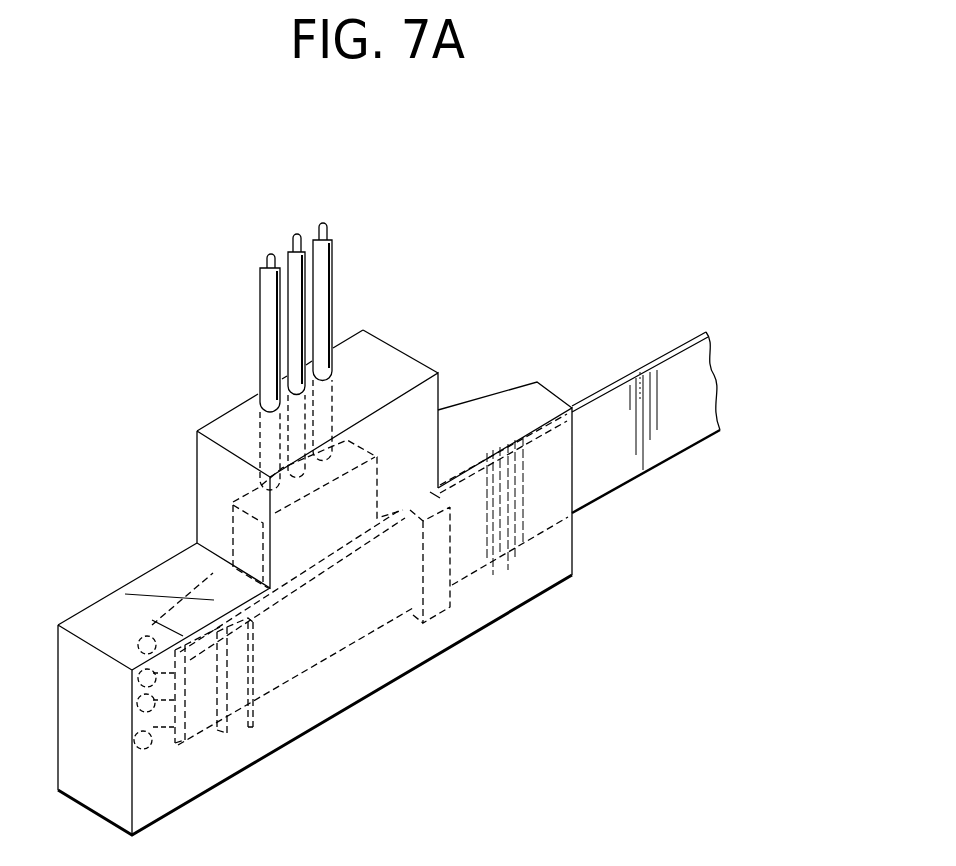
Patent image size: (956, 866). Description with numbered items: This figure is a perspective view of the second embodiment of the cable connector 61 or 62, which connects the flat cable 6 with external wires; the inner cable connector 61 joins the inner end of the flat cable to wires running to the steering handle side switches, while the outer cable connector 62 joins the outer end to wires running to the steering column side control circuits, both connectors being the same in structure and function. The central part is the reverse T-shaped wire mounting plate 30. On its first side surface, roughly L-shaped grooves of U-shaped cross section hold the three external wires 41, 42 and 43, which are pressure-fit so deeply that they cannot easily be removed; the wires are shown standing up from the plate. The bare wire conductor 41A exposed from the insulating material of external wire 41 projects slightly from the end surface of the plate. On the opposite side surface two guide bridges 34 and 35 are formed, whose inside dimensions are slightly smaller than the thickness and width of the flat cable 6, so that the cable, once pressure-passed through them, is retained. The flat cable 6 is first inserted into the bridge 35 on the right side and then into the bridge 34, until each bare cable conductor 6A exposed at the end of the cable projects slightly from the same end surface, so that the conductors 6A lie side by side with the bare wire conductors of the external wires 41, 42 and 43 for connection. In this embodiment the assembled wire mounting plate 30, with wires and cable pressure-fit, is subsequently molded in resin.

The flat cable 6 is at (645, 383).
The cable conductors 6A is at (176, 666).
The wire mounting plate 30 is at (403, 443).
The guide bridge 34 is at (247, 728).
The guide bridge 35 is at (440, 610).
The external wire 41 is at (266, 298).
The bare wire conductor 41A is at (133, 667).
The external wire 42 is at (290, 263).
The external wire 43 is at (323, 283).
The inner cable connector 61 is at (329, 608).
The outer cable connector 62 is at (443, 670).